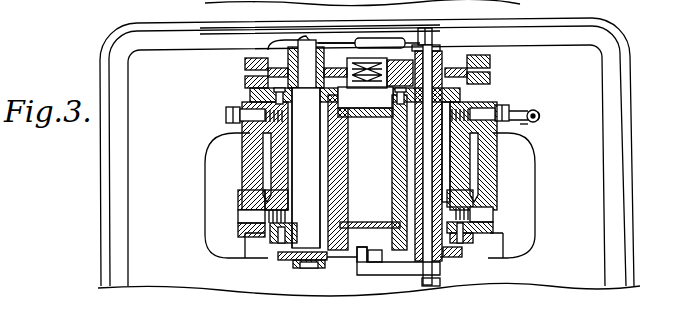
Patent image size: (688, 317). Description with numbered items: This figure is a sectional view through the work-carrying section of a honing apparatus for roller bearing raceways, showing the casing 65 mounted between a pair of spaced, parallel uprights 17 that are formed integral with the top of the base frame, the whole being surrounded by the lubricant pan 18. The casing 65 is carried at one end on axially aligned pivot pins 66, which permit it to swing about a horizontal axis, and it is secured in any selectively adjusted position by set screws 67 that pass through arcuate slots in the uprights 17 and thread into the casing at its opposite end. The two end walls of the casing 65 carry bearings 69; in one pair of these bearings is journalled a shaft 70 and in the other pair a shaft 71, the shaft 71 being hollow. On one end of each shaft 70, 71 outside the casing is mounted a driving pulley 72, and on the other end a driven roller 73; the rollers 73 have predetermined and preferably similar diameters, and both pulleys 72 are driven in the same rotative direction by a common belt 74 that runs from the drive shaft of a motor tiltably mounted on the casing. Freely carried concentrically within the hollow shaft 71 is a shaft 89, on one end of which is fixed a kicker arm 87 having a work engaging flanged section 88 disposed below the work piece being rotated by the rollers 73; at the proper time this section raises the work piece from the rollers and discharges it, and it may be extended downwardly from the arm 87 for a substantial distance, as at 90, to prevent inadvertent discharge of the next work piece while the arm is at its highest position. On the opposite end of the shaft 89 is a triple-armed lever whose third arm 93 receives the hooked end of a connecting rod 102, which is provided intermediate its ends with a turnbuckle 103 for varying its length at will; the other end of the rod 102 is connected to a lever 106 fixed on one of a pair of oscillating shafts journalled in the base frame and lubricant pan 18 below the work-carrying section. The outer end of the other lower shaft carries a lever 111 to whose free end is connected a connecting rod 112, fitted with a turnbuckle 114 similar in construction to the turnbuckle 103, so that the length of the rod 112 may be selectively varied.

The uprights 17 is at (250, 160).
The lubricant pan 18 is at (630, 165).
The casing 65 is at (346, 151).
The pivot pins 66 is at (250, 215).
The set screws 67 is at (226, 114).
The bearings 69 is at (256, 93).
The shaft 70 is at (310, 178).
The hollow shaft 71 is at (430, 197).
The driving pulley 72 is at (252, 58).
The driven roller 73 is at (278, 262).
The belt 74 is at (245, 80).
The kicker arm 87 is at (398, 278).
The work engaging flanged section 88 is at (358, 255).
The shaft 89 is at (430, 182).
The downward extension 90 is at (378, 255).
The third arm 93 is at (437, 28).
The connecting rod 102 is at (342, 41).
The turnbuckle 103 is at (386, 38).
The lever 106 is at (287, 38).
The lever 111 is at (520, 126).
The connecting rod 112 is at (536, 110).
The turnbuckle 114 is at (539, 118).